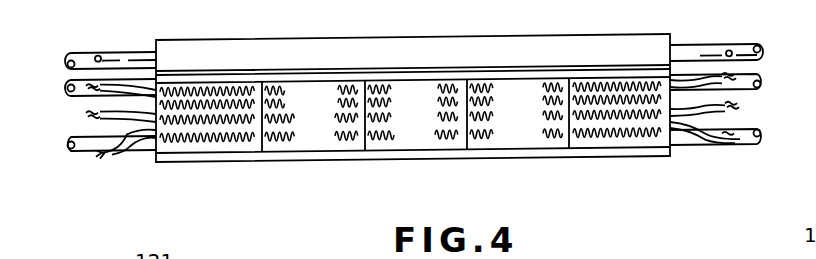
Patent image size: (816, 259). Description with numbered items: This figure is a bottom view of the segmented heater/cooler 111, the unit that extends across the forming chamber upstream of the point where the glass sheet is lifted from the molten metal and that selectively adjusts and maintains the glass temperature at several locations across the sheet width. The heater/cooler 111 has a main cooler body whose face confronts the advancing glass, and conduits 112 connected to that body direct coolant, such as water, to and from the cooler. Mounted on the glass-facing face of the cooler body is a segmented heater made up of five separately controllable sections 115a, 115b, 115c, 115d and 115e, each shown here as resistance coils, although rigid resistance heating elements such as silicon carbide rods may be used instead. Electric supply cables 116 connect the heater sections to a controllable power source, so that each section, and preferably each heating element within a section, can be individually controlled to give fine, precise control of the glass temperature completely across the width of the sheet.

The heater/cooler 111 is at (245, 48).
The conduits 112 is at (110, 57).
The heater section 115a is at (197, 145).
The heater section 115b is at (289, 146).
The heater section 115c is at (394, 147).
The heater section 115d is at (492, 148).
The heater section 115e is at (597, 150).
The electric supply cables 116 is at (124, 118).